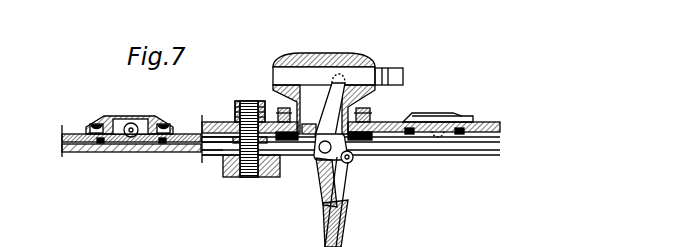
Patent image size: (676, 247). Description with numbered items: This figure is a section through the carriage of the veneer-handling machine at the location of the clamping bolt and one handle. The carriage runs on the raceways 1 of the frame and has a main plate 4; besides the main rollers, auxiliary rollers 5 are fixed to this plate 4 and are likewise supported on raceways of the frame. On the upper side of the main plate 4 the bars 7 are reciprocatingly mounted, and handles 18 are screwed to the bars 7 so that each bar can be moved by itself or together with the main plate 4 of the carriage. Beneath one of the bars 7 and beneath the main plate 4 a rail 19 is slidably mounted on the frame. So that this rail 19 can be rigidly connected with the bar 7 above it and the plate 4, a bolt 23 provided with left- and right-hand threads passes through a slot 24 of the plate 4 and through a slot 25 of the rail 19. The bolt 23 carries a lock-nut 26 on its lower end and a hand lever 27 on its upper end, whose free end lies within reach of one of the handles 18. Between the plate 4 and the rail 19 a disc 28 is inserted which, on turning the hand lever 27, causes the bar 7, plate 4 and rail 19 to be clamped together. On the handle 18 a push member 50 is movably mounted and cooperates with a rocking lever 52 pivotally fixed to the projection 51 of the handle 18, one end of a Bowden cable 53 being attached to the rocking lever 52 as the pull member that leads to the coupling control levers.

The raceways 1 is at (108, 150).
The main plate 4 is at (71, 133).
The auxiliary rollers 5 is at (131, 129).
The bars 7 is at (487, 122).
The handles 18 is at (337, 54).
The rail 19 is at (480, 156).
The bolt 23 is at (248, 150).
The slot 24 is at (207, 130).
The slot 25 is at (236, 157).
The lock-nut 26 is at (274, 170).
The hand lever 27 is at (242, 101).
The disc 28 is at (222, 151).
The push member 50 is at (405, 76).
The projection 51 is at (318, 176).
The rocking lever 52 is at (330, 112).
The Bowden cable 53 is at (347, 190).